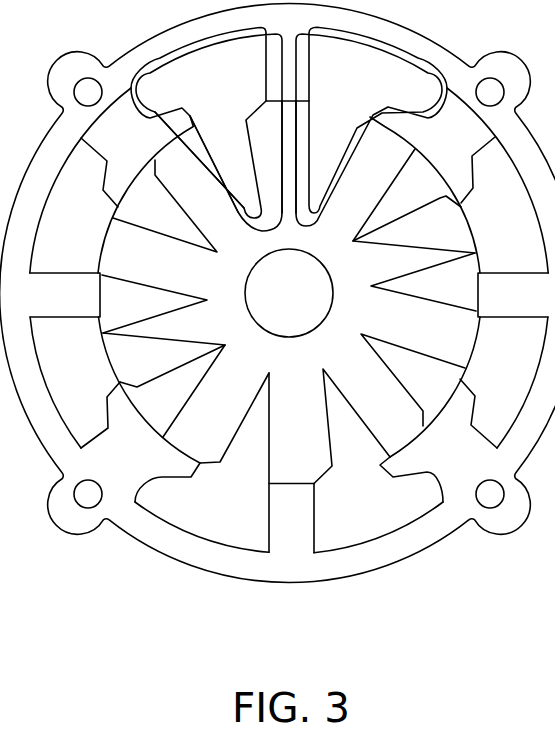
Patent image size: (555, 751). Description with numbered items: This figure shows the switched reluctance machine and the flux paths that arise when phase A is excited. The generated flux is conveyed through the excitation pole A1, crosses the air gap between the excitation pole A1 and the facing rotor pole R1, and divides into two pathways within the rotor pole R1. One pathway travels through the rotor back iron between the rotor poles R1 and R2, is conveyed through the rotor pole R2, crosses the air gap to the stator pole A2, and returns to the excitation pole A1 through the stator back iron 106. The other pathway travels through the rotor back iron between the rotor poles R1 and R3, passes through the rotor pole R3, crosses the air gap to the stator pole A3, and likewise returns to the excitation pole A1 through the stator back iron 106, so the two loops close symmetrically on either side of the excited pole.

The stator back iron 106 is at (297, 571).
The excitation pole A1 is at (318, 72).
The stator pole A2 is at (151, 98).
The stator pole A3 is at (476, 158).
The rotor pole R1 is at (313, 132).
The rotor pole R2 is at (217, 148).
The rotor pole R3 is at (395, 191).